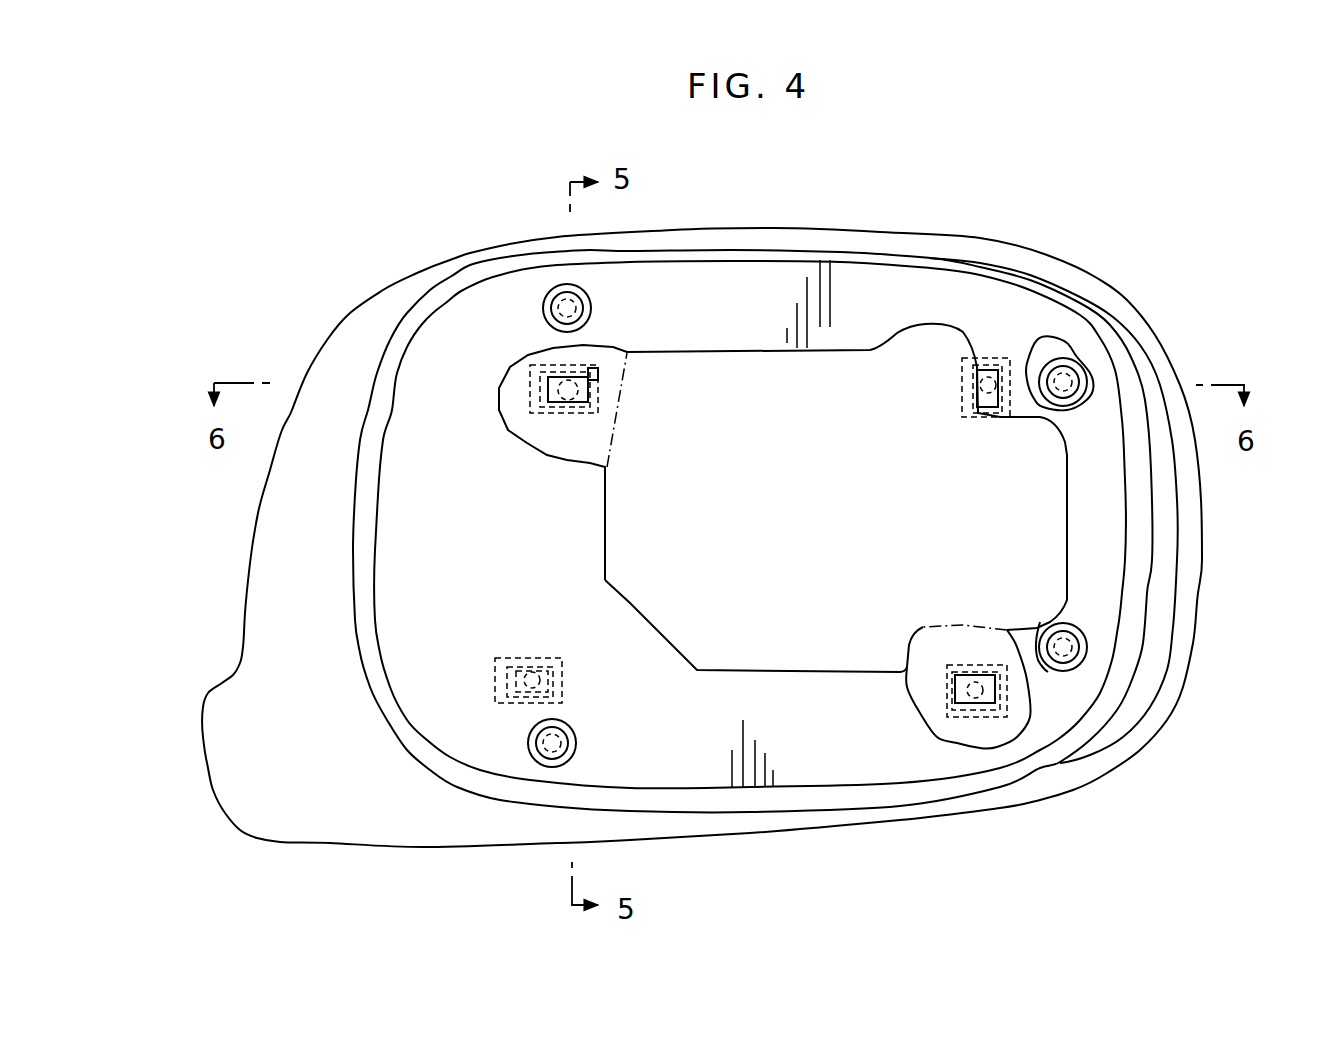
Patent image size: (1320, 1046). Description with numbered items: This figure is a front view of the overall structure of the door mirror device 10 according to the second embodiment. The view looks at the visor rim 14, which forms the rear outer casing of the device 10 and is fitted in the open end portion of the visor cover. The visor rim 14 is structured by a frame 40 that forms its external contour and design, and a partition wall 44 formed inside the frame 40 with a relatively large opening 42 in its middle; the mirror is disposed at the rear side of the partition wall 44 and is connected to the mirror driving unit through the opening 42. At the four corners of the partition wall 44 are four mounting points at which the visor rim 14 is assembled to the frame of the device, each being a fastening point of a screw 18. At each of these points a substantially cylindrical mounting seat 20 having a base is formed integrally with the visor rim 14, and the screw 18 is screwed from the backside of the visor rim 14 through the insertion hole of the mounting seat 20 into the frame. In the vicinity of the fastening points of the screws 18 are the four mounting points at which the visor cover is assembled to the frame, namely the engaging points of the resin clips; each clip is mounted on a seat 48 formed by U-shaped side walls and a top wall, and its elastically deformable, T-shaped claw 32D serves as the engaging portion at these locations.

The door mirror device 10 is at (1027, 178).
The visor rim 14 is at (1212, 577).
The screw 18 is at (564, 304).
The mounting seat 20 is at (549, 322).
The claw 32D is at (578, 387).
The frame 40 is at (1177, 653).
The opening 42 is at (806, 665).
The partition wall 44 is at (827, 767).
The seat 48 is at (612, 346).